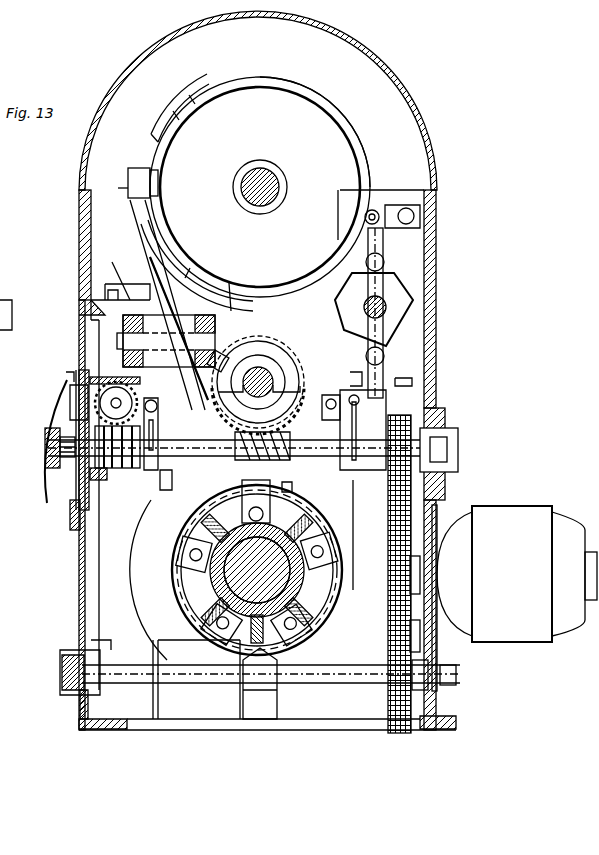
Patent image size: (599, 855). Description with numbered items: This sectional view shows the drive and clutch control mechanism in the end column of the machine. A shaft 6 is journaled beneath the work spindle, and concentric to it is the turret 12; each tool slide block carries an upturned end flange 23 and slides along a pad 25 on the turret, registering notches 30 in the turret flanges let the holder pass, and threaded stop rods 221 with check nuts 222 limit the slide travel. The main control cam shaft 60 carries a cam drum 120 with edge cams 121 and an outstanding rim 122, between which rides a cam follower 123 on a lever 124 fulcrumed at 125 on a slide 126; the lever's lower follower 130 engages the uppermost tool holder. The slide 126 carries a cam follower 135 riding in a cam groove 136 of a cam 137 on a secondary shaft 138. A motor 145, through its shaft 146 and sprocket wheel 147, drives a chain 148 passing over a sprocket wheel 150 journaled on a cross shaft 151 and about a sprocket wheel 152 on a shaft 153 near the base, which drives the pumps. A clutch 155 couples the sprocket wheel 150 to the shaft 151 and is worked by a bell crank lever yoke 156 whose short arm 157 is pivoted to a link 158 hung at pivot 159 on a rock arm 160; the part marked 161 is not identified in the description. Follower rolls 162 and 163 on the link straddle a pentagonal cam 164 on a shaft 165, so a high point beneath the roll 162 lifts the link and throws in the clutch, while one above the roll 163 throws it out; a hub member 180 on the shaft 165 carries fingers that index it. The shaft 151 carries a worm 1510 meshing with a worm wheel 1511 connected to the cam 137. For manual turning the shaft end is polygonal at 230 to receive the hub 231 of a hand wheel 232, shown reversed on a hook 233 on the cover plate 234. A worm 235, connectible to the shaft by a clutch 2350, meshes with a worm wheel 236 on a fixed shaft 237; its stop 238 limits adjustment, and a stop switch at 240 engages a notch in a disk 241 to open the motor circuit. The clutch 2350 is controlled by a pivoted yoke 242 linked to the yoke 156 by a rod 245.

The shaft 6 is at (243, 668).
The turret 12 is at (186, 604).
The upturned end flange 23 is at (178, 545).
The pad 25 is at (328, 528).
The notches 30 is at (300, 514).
The main control cam shaft 60 is at (273, 172).
The cam drum 120 is at (205, 105).
The edge cams 121 is at (143, 152).
The outstanding rim 122 is at (318, 94).
The cam follower 123 is at (158, 192).
The lever 124 is at (145, 250).
The fulcrum 125 is at (216, 340).
The slide 126 is at (203, 292).
The follower 130 is at (282, 492).
The cam follower 135 is at (250, 372).
The cam groove 136 is at (298, 345).
The cam 137 is at (284, 366).
The secondary shaft 138 is at (228, 362).
The motor 145 is at (512, 520).
The shaft 146 is at (420, 568).
The sprocket wheel 147 is at (422, 600).
The chain 148 is at (418, 506).
The sprocket wheel 150 is at (448, 406).
The cross shaft 151 is at (304, 432).
The sprocket wheel 152 is at (434, 716).
The shaft 153 is at (305, 688).
The clutch 155 is at (372, 426).
The bell crank lever yoke 156 is at (330, 400).
The short arm 157 is at (358, 374).
The link 158 is at (384, 384).
The pivot 159 is at (365, 218).
The rock arm 160 is at (392, 210).
The rod 161 is at (375, 313).
The follower roll 162 is at (384, 262).
The follower roll 163 is at (384, 358).
The pentagonal cam 164 is at (398, 290).
The shaft 165 is at (390, 309).
The hub member 180 is at (10, 300).
The threaded stop rods 221 is at (318, 642).
The check nuts 222 is at (206, 636).
The polygonal end 230 is at (60, 478).
The hub 231 is at (45, 458).
The hand wheel 232 is at (68, 506).
The hook 233 is at (68, 374).
The cover plate 234 is at (84, 338).
The worm 235 is at (118, 500).
The worm wheel 236 is at (106, 377).
The fixed shaft 237 is at (142, 363).
The stop 238 is at (95, 481).
The stop switch 240 is at (96, 405).
The disk 241 is at (72, 388).
The pivoted yoke 242 is at (168, 400).
The rod 245 is at (297, 444).
The worm 1510 is at (254, 494).
The worm wheel 1511 is at (166, 470).
The clutch 2350 is at (168, 505).